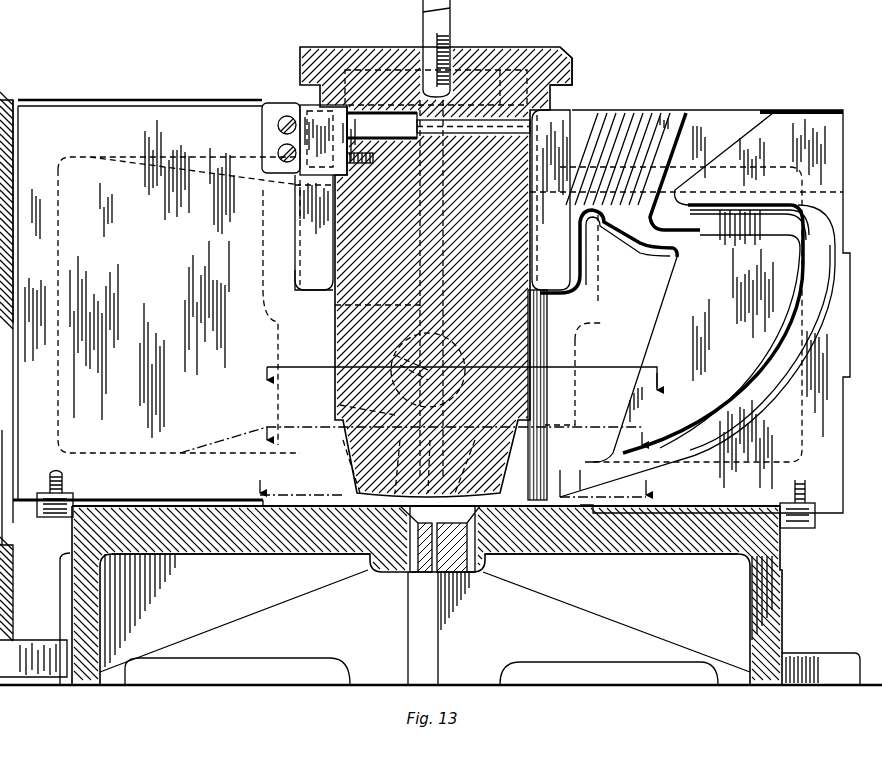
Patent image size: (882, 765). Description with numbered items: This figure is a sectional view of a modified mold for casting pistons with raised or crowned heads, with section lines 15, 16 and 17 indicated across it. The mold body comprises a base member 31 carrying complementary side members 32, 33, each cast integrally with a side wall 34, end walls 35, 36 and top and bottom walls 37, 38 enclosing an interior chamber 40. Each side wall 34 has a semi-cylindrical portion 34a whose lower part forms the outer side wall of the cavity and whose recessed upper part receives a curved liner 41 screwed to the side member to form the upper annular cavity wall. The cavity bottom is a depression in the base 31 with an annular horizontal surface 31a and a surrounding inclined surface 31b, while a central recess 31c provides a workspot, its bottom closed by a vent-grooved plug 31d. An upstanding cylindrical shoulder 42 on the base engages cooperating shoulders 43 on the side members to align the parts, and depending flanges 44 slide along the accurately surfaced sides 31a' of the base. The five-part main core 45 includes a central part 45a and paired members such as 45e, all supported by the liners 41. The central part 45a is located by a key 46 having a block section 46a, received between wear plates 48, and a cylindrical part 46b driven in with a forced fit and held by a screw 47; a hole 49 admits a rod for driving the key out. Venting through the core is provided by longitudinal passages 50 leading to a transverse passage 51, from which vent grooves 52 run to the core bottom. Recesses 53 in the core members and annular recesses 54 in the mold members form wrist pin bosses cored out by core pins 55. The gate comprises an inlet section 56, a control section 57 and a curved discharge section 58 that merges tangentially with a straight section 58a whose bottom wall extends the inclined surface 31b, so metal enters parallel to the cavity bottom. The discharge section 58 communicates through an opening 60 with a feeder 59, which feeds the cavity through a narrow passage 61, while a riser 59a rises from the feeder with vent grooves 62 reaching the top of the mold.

The section line 15- 15 is at (456, 486).
The section line 16- 16 is at (422, 432).
The section line 17- 17 is at (457, 382).
The base member 31 is at (237, 553).
The annular horizontal surface 31a is at (456, 628).
The accurately surfaced sides of the base 31a' is at (439, 619).
The annular inclined surface 31b is at (535, 540).
The central recess 31c is at (410, 569).
The plug 31d is at (433, 573).
The side member 32 is at (129, 241).
The side member 33 is at (5, 510).
The side wall 34 is at (95, 345).
The semi-cylindrical portion 34a is at (325, 316).
The end wall 35 is at (52, 198).
The end wall 36 is at (848, 195).
The top wall 37 is at (149, 120).
The bottom wall 38 is at (172, 456).
The interior chamber 40 is at (813, 446).
The curved liner 41 is at (562, 115).
The upstanding cylindrical shoulder 42 is at (282, 548).
The cooperating shoulder 43 is at (263, 500).
The depending flanges or tongues 44 is at (43, 517).
The main core 45 is at (343, 47).
The central part of the core 45a is at (535, 47).
The core member 45e is at (500, 47).
The key 46 is at (293, 103).
The block section of the key 46a is at (310, 115).
The cylindrical part of the key 46b is at (385, 120).
The screw 47 is at (298, 188).
The wear plate 48 is at (267, 110).
The hole 49 is at (466, 115).
The longitudinal passage 50 is at (335, 305).
The transverse passage 51 is at (340, 405).
The vent groove 52 is at (345, 468).
The recess 53 is at (395, 340).
The annular recess 54 is at (395, 355).
The core pin 55 is at (400, 365).
The inlet section 56 is at (725, 112).
The control section 57 is at (742, 222).
The discharge section 58 is at (768, 367).
The straight section 58a is at (612, 488).
The feeder 59 is at (611, 359).
The riser 59a is at (607, 245).
The opening 60 is at (574, 482).
The passage 61 is at (548, 356).
The vent groove 62 is at (637, 128).